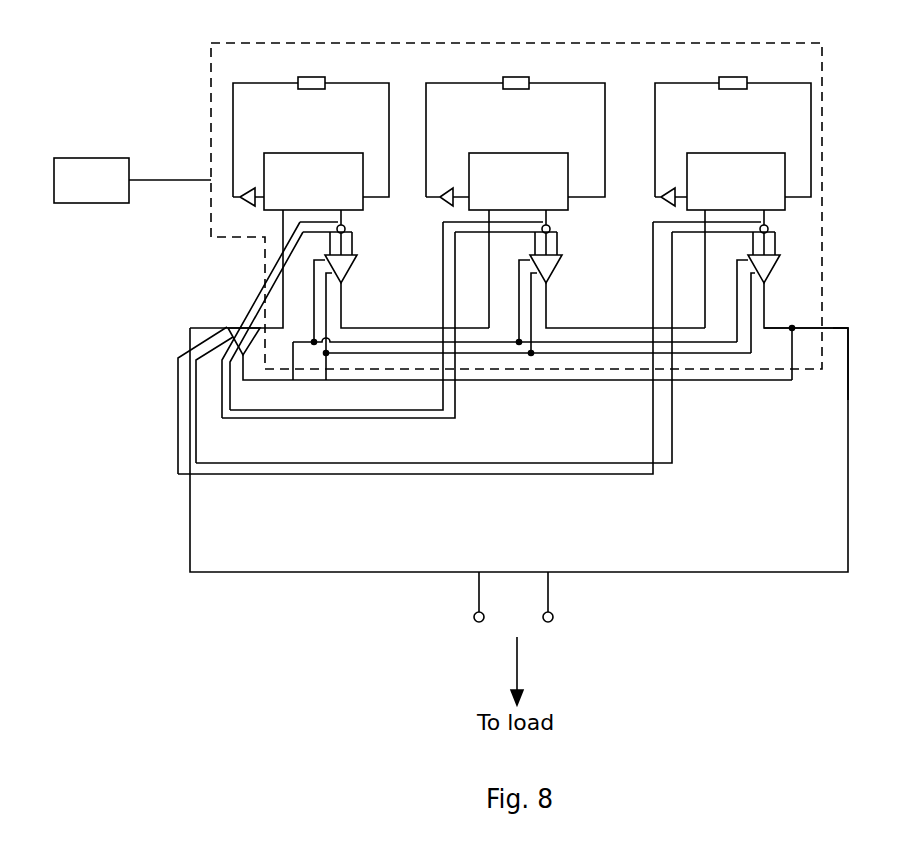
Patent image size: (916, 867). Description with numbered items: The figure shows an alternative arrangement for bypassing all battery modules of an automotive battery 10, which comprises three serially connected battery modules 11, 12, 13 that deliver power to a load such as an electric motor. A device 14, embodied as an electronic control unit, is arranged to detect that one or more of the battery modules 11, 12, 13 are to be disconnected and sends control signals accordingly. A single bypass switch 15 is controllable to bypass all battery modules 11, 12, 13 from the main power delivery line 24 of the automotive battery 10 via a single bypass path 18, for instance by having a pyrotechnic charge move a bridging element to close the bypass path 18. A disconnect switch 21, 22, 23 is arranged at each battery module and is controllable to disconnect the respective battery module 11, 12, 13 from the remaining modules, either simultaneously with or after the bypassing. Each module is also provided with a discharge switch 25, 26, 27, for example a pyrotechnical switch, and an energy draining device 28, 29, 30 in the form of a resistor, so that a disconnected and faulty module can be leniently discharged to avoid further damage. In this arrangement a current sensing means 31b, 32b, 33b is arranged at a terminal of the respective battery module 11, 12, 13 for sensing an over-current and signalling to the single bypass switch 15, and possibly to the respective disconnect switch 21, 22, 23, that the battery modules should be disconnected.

The automotive battery 10 is at (812, 73).
The first battery module 11 is at (340, 160).
The second battery module 12 is at (542, 167).
The third battery module 13 is at (759, 172).
The device for detecting that battery modules are to be disconnected 14 is at (108, 171).
The bypass switch 15 is at (245, 328).
The bypass path 18 is at (757, 381).
The first disconnect switch 21 is at (352, 264).
The second disconnect switch 22 is at (557, 264).
The third disconnect switch 23 is at (775, 264).
The main power delivery line 24 is at (833, 328).
The first discharge switch 25 is at (240, 190).
The second discharge switch 26 is at (440, 190).
The third discharge switch 27 is at (662, 190).
The first energy draining device 28 is at (306, 76).
The second energy draining device 29 is at (511, 76).
The third energy draining device 30 is at (729, 76).
The first current sensing means 31b is at (346, 227).
The second current sensing means 32b is at (551, 227).
The third current sensing means 33b is at (768, 226).